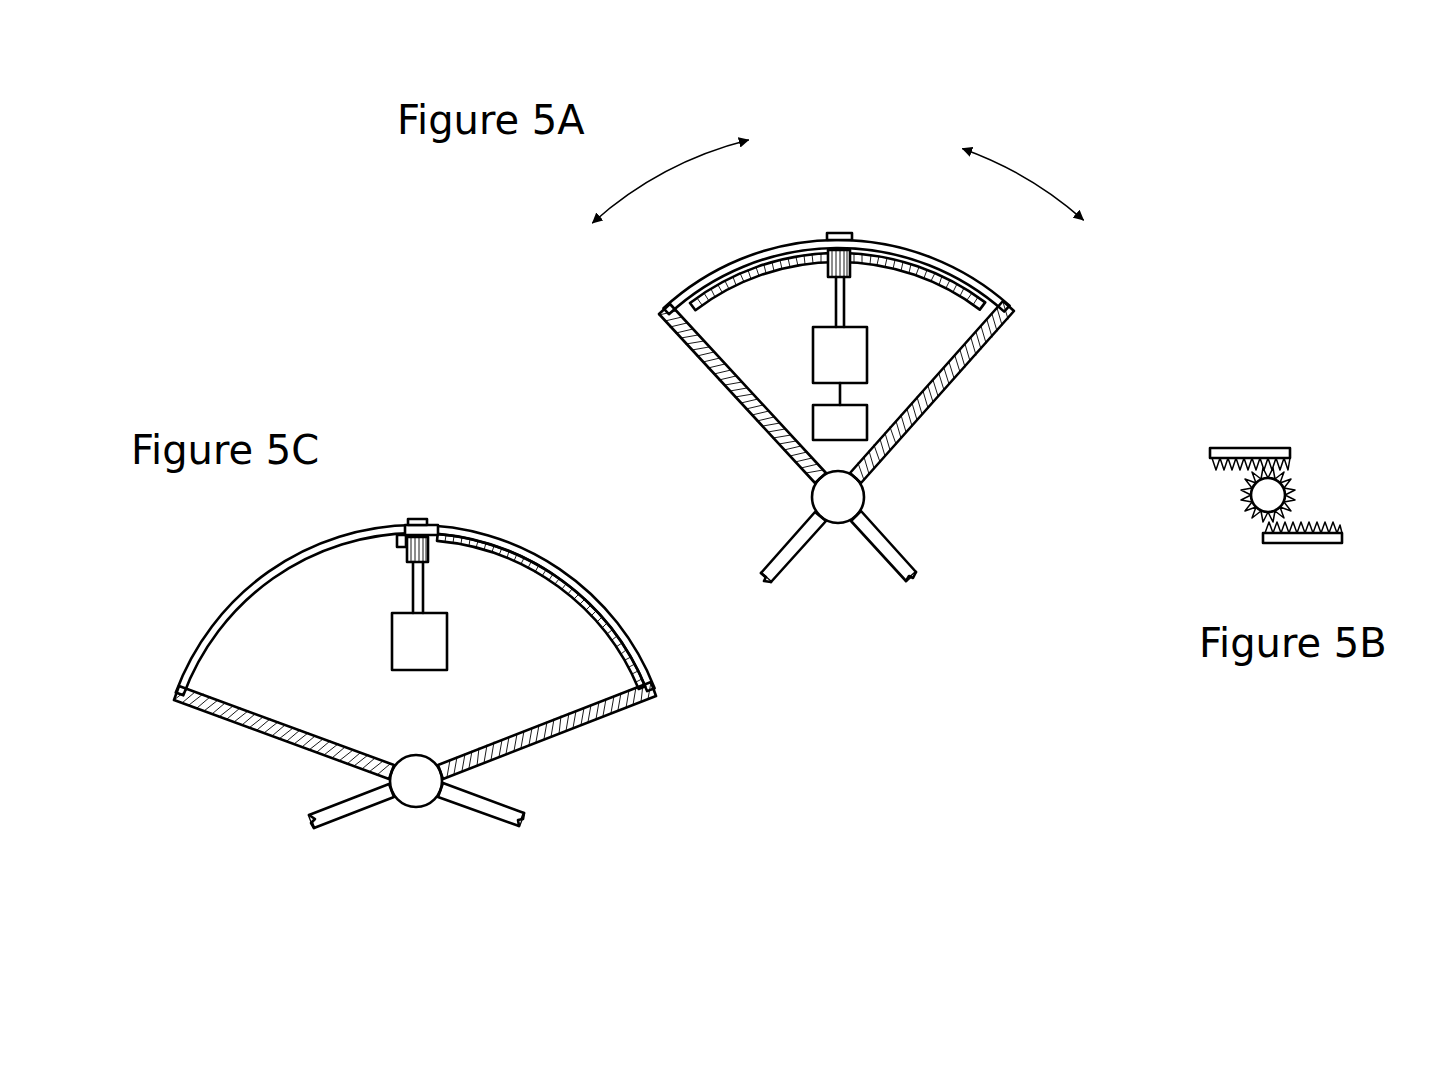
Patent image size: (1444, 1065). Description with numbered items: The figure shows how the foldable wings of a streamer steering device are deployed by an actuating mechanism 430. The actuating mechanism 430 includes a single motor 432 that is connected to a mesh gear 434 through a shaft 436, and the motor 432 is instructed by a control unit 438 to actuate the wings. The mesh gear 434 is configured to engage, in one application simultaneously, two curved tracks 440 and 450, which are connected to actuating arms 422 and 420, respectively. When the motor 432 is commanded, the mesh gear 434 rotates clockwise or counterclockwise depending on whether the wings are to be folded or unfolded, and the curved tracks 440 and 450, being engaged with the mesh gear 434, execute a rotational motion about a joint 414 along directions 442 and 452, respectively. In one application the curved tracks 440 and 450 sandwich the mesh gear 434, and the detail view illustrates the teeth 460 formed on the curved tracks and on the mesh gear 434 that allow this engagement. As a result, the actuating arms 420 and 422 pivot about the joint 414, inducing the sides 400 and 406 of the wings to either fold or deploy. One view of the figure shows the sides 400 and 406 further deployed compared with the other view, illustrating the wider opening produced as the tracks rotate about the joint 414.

In FIG. 5A, the side 400 is at (787, 547).
In FIG. 5C, the side 400 is at (358, 808).
In FIG. 5A, the side 406 is at (903, 553).
In FIG. 5C, the side 406 is at (490, 805).
In FIG. 5A, the joint 414 is at (848, 497).
In FIG. 5C, the joint 414 is at (418, 787).
In FIG. 5A, the actuating arm 420 is at (737, 395).
In FIG. 5C, the actuating arm 420 is at (242, 717).
In FIG. 5A, the actuating arm 422 is at (948, 383).
In FIG. 5C, the actuating arm 422 is at (587, 727).
In FIG. 5A, the actuating mechanism 430 is at (820, 236).
In FIG. 5A, the motor 432 is at (859, 367).
In FIG. 5C, the motor 432 is at (438, 655).
In FIG. 5A, the mesh gear 434 is at (837, 232).
In FIG. 5C, the mesh gear 434 is at (417, 522).
In FIG. 5B, the mesh gear 434 is at (1270, 495).
In FIG. 5A, the shaft 436 is at (838, 298).
In FIG. 5C, the shaft 436 is at (418, 578).
In FIG. 5A, the control unit 438 is at (859, 435).
In FIG. 5A, the curved track 440 is at (927, 270).
In FIG. 5C, the curved track 440 is at (557, 577).
In FIG. 5B, the curved track 440 is at (1233, 448).
In FIG. 5A, the direction 442 is at (1027, 178).
In FIG. 5A, the curved track 450 is at (715, 277).
In FIG. 5C, the curved track 450 is at (293, 559).
In FIG. 5B, the curved track 450 is at (1297, 543).
In FIG. 5A, the direction 452 is at (652, 176).
In FIG. 5B, the teeth 460 is at (1265, 530).